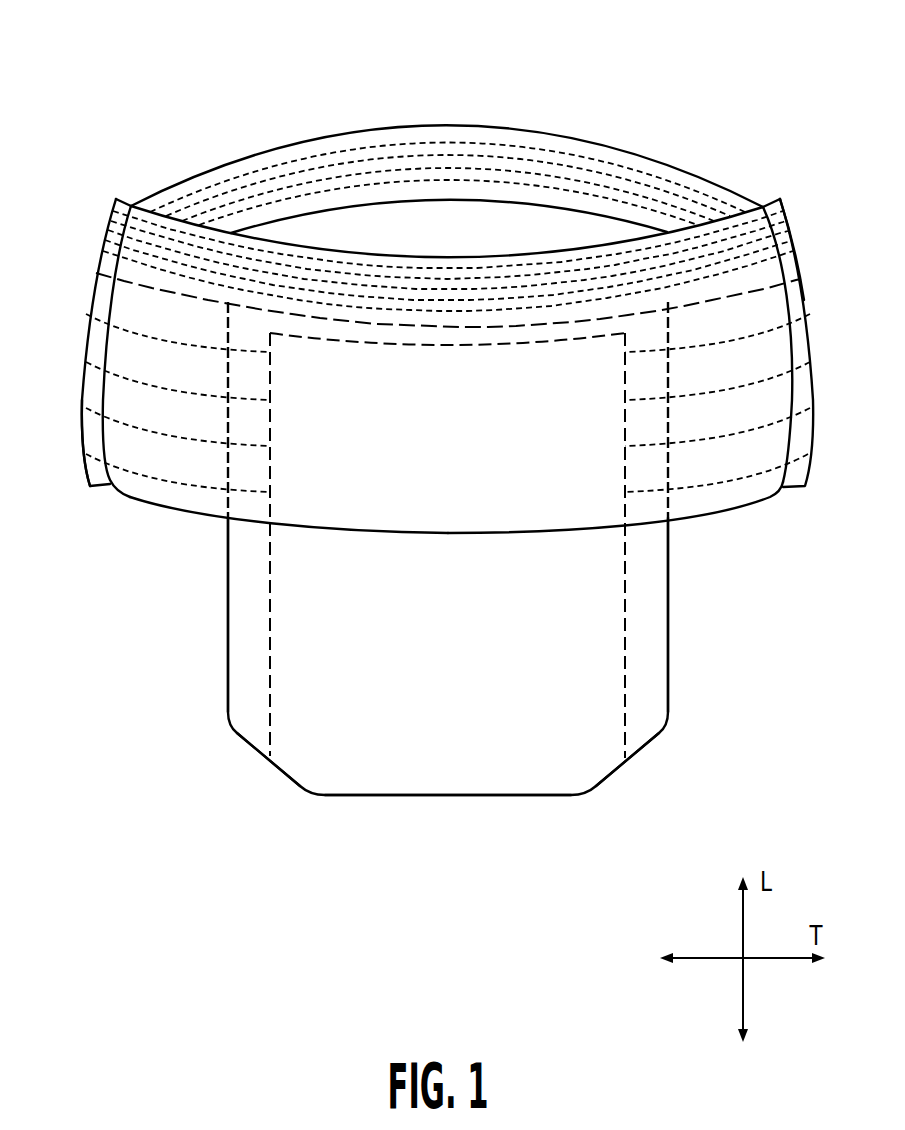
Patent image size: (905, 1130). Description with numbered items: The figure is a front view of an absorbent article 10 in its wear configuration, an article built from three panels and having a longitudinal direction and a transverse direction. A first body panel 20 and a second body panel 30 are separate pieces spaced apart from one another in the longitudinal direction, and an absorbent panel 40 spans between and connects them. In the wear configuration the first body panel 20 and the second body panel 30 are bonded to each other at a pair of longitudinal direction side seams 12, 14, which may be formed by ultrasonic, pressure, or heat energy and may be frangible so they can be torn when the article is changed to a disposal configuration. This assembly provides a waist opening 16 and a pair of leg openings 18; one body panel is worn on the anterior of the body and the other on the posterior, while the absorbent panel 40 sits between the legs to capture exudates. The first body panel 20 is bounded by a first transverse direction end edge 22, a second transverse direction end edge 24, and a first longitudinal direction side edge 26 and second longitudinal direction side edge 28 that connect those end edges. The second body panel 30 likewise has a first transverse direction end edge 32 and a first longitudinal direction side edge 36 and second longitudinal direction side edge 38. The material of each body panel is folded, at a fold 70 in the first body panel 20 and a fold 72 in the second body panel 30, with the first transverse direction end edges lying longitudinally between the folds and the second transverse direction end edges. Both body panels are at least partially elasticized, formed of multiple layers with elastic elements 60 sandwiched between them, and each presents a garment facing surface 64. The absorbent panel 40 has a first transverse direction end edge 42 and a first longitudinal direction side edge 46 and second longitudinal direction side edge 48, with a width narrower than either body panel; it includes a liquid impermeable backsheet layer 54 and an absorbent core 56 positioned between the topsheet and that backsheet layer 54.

The absorbent article 10 is at (436, 465).
The side seam 12 is at (814, 392).
The side seam 14 is at (100, 254).
The waist opening 16 is at (446, 210).
The leg openings 18 is at (160, 602).
The first body panel 20 is at (158, 488).
The first transverse direction end edge 22 is at (718, 302).
The second transverse direction end edge 24 is at (722, 512).
The first longitudinal direction side edge 26 is at (812, 338).
The second longitudinal direction side edge 28 is at (84, 346).
The second body panel 30 is at (340, 152).
The first transverse direction end edge 32 is at (530, 212).
The first longitudinal direction side edge 36 is at (803, 262).
The second longitudinal direction side edge 38 is at (88, 293).
The absorbent panel 40 is at (642, 717).
The first transverse direction end edge 42 is at (492, 310).
The first longitudinal direction side edge 46 is at (668, 568).
The second longitudinal direction side edge 48 is at (227, 662).
The backsheet layer 54 is at (500, 762).
The absorbent core 56 is at (385, 763).
The elastic elements 60 is at (498, 152).
The garment facing surface 64 is at (158, 424).
The fold 70 is at (336, 252).
The fold 72 is at (398, 150).